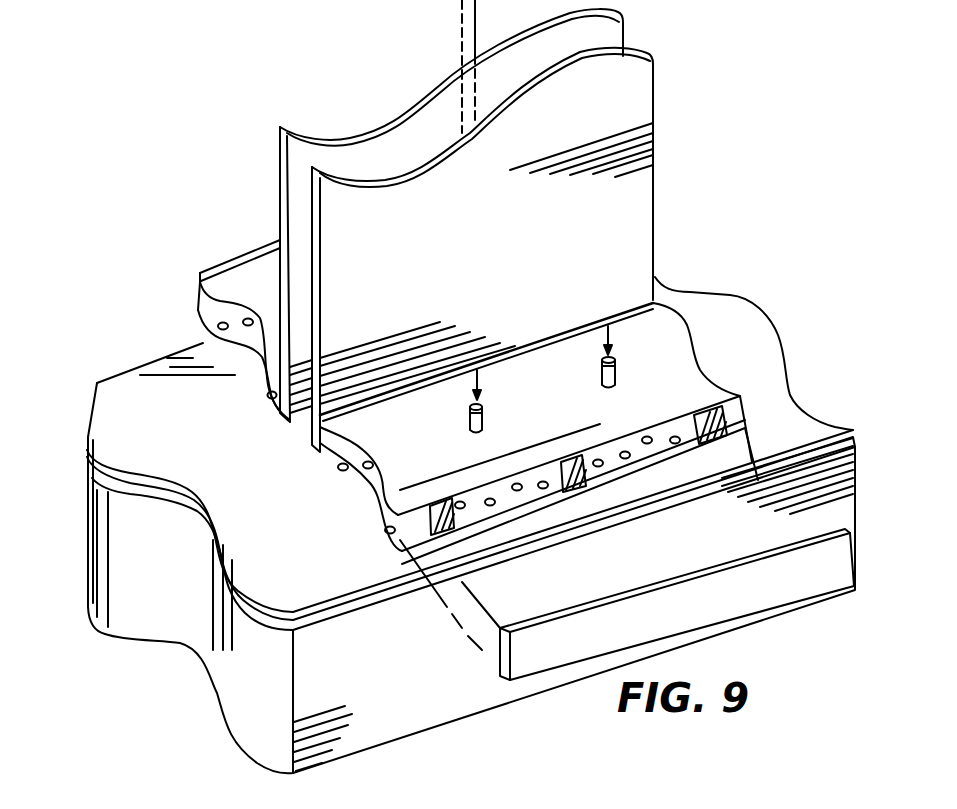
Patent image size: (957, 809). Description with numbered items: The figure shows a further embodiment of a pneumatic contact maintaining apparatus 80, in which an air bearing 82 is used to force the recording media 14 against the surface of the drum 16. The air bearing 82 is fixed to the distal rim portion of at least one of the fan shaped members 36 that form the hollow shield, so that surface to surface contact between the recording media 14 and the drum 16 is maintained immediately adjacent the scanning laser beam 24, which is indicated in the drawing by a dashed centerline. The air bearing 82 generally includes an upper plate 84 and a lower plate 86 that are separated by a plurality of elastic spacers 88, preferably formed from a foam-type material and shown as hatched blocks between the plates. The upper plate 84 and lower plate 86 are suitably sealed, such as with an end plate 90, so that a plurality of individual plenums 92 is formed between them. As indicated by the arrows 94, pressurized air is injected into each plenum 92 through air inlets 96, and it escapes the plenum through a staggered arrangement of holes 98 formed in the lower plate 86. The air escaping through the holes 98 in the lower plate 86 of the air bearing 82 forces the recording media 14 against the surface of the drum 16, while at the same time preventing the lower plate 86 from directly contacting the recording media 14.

The recording media 14 is at (140, 420).
The drum 16 is at (376, 672).
The scanning laser beam 24 is at (460, 33).
The fan shaped members 36 is at (590, 40).
The pneumatic contact maintaining apparatus 80 is at (162, 148).
The air bearing 82 is at (199, 311).
The upper plate 84 is at (680, 367).
The lower plate 86 is at (757, 440).
The elastic spacers 88 is at (575, 457).
The end plate 90 is at (793, 563).
The plenums 92 is at (512, 497).
The arrows 94 is at (608, 328).
The air inlets 96 is at (600, 375).
The holes 98 is at (516, 484).